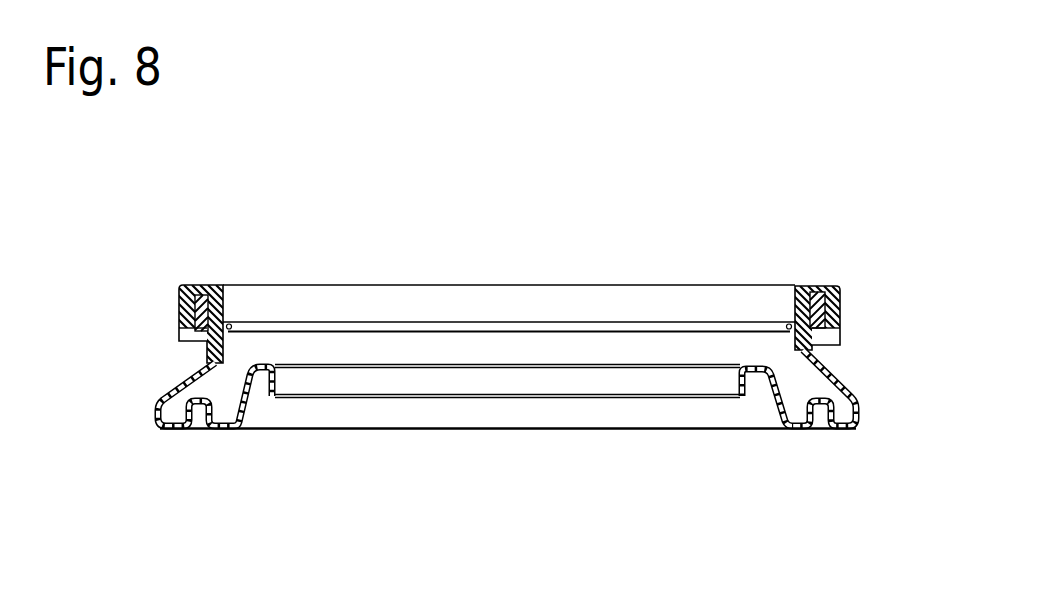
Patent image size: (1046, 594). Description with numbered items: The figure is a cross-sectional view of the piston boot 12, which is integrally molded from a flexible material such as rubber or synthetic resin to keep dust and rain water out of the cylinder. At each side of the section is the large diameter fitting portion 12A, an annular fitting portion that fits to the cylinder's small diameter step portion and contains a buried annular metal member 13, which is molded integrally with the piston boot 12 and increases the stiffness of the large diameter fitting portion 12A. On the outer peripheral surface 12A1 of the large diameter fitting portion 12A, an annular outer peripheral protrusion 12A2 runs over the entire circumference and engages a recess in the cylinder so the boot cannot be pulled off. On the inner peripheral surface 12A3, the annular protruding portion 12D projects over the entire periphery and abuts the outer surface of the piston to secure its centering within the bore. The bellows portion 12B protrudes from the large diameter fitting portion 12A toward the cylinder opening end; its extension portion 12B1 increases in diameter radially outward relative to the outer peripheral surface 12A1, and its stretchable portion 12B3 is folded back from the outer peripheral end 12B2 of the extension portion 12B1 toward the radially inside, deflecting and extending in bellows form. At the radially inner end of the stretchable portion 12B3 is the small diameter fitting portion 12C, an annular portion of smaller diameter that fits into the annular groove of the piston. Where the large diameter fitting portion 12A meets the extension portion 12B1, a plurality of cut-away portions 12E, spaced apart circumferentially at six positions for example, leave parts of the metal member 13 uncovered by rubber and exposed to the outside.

The piston boot 12 is at (505, 276).
The large diameter fitting portion 12A is at (807, 297).
The outer peripheral surface 12A1 is at (181, 303).
The outer peripheral protrusion 12A2 is at (181, 314).
The inner peripheral surface 12A3 is at (642, 308).
The bellows portion 12B is at (853, 422).
The extension portion 12B1 is at (828, 368).
The outer peripheral end 12B2 is at (157, 412).
The stretchable portion 12B3 is at (798, 427).
The small diameter fitting portion 12C is at (273, 400).
The annular protruding portion 12D is at (370, 327).
The cut-away portions 12E is at (183, 348).
The metal member 13 is at (832, 292).